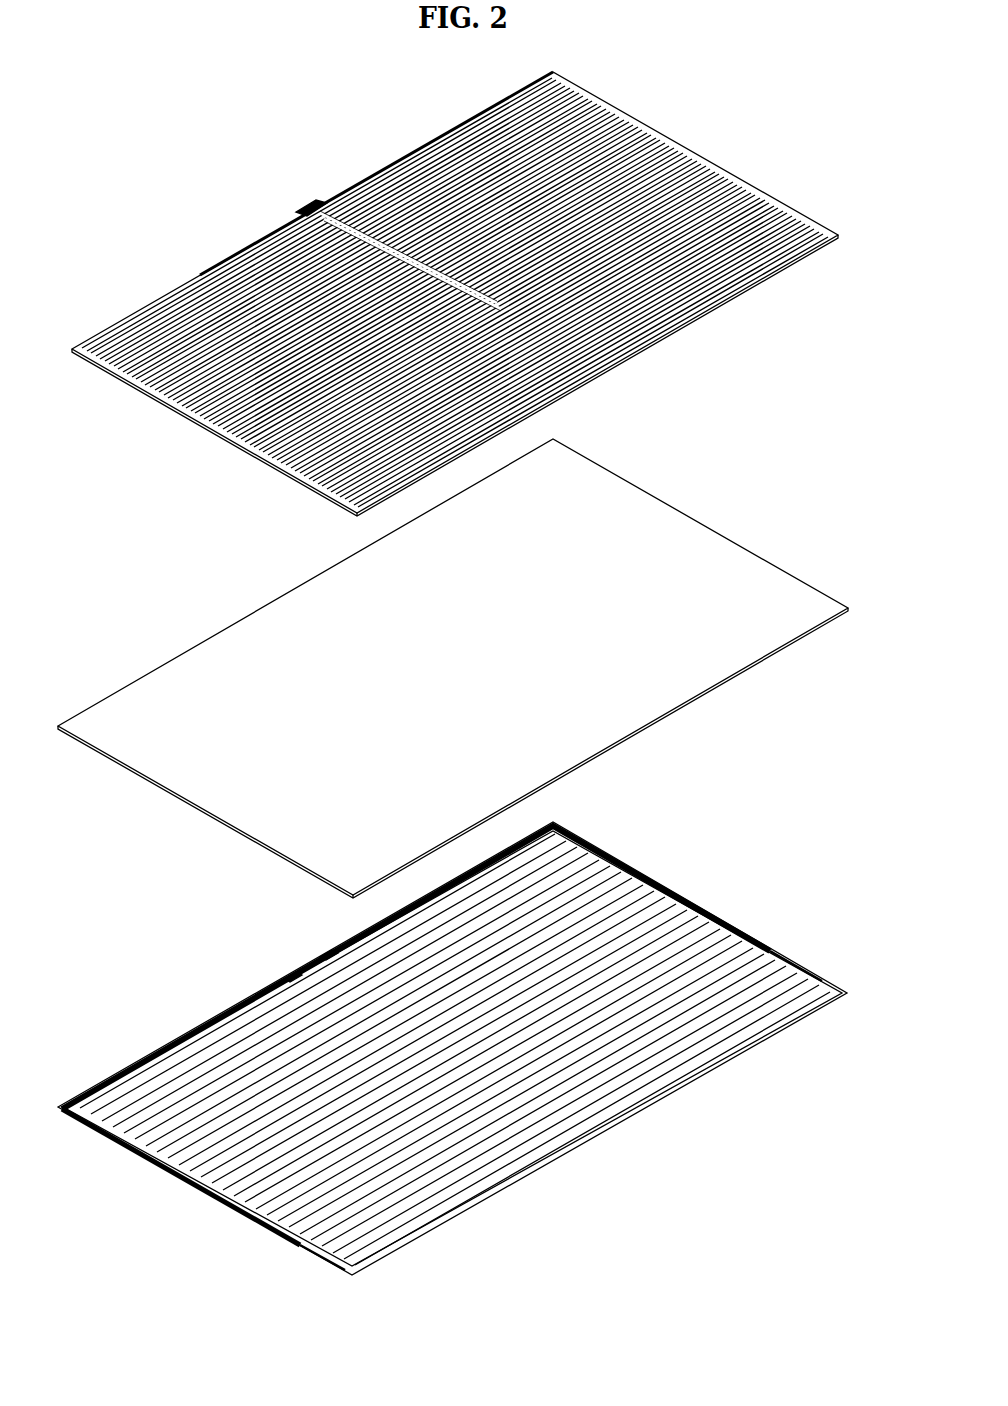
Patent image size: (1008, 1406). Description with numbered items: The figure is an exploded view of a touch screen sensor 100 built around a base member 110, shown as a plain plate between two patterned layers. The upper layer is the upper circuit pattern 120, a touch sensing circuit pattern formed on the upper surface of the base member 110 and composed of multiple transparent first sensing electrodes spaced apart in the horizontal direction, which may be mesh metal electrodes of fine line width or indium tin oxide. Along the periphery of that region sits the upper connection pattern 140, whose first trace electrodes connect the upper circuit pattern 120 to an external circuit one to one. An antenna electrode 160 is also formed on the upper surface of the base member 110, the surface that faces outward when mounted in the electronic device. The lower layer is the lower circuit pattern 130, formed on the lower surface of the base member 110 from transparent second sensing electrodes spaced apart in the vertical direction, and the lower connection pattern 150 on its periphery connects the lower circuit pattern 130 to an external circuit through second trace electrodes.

The touch screen sensor 100 is at (768, 145).
The base member 110 is at (746, 558).
The upper circuit pattern 120 is at (678, 328).
The lower circuit pattern 130 is at (780, 1007).
The upper connection pattern 140 is at (296, 210).
The lower connection pattern 150 is at (578, 833).
The antenna electrode 160 is at (340, 212).